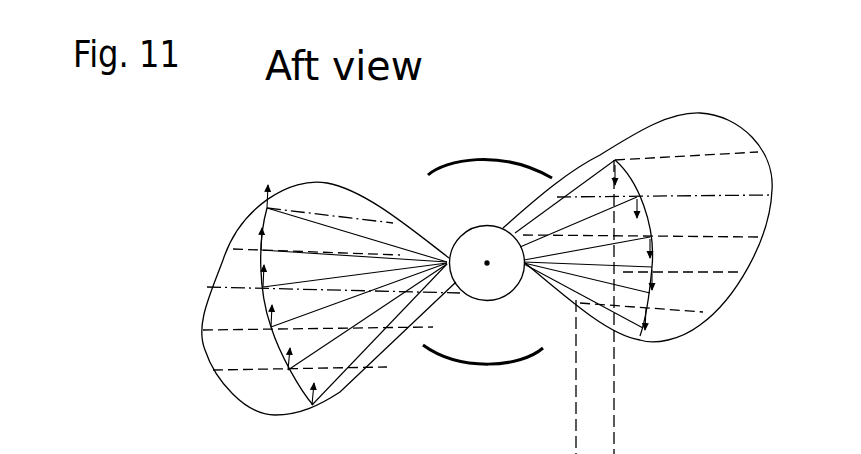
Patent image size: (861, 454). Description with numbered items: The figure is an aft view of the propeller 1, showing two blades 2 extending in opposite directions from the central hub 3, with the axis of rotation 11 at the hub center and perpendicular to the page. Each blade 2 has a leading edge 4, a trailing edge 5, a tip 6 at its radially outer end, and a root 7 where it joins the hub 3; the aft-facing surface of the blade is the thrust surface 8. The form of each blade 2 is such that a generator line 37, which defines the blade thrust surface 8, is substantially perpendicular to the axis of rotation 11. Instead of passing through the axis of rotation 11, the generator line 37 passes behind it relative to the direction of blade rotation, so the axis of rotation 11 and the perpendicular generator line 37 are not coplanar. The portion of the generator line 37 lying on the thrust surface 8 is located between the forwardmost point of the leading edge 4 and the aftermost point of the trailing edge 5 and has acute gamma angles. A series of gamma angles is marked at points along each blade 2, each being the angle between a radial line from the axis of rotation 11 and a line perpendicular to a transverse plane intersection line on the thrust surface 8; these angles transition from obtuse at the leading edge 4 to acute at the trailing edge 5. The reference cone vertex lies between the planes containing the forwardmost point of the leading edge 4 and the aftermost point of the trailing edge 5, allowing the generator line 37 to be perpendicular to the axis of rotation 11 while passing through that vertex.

The propeller 1 is at (467, 150).
The blade 2 is at (558, 157).
The hub 3 is at (486, 302).
The leading edge 4 is at (657, 348).
The trailing edge 5 is at (677, 152).
The tip 6 is at (792, 174).
The root 7 is at (483, 346).
The thrust surface 8 is at (740, 209).
The axis of rotation 11 is at (483, 272).
The generator line 37 is at (757, 237).